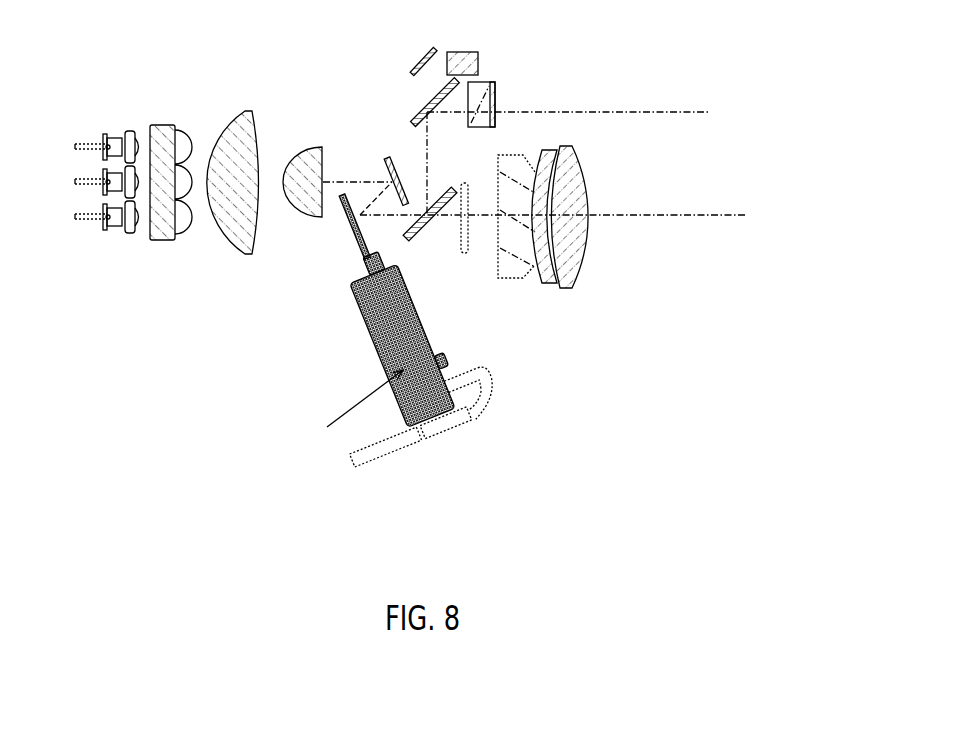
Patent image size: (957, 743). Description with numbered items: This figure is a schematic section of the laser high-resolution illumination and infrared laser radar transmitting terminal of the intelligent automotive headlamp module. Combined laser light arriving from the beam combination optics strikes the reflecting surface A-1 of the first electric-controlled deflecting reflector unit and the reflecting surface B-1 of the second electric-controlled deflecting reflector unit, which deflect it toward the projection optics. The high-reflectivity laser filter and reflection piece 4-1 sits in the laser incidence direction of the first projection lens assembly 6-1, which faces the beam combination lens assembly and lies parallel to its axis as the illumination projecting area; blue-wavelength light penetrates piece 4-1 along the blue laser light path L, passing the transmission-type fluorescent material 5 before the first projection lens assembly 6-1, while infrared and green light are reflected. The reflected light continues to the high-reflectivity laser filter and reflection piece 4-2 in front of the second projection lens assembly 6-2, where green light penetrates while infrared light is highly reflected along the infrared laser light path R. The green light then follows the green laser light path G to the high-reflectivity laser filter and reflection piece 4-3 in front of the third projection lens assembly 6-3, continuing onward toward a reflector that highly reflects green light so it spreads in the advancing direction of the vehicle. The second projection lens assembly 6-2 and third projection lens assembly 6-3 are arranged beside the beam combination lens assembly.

The reflecting surface of the first electric-controlled deflecting reflector unit A-1 is at (381, 158).
The high-reflectivity laser filter and reflection piece 4-2 is at (417, 112).
The high-reflectivity laser filter and reflection piece 4-3 is at (422, 60).
The third projection lens assembly 6-3 is at (467, 52).
The second projection lens assembly 6-2 is at (500, 87).
The green laser light path G is at (429, 182).
The infrared laser light path R is at (695, 103).
The first projection lens assembly 6-1 is at (595, 192).
The blue laser light path L is at (677, 223).
The transmission-type fluorescent material 5 is at (472, 249).
The high-reflectivity laser filter and reflection piece 4-1 is at (423, 237).
The reflecting surface of the second electric-controlled deflecting reflector unit B-1 is at (347, 218).